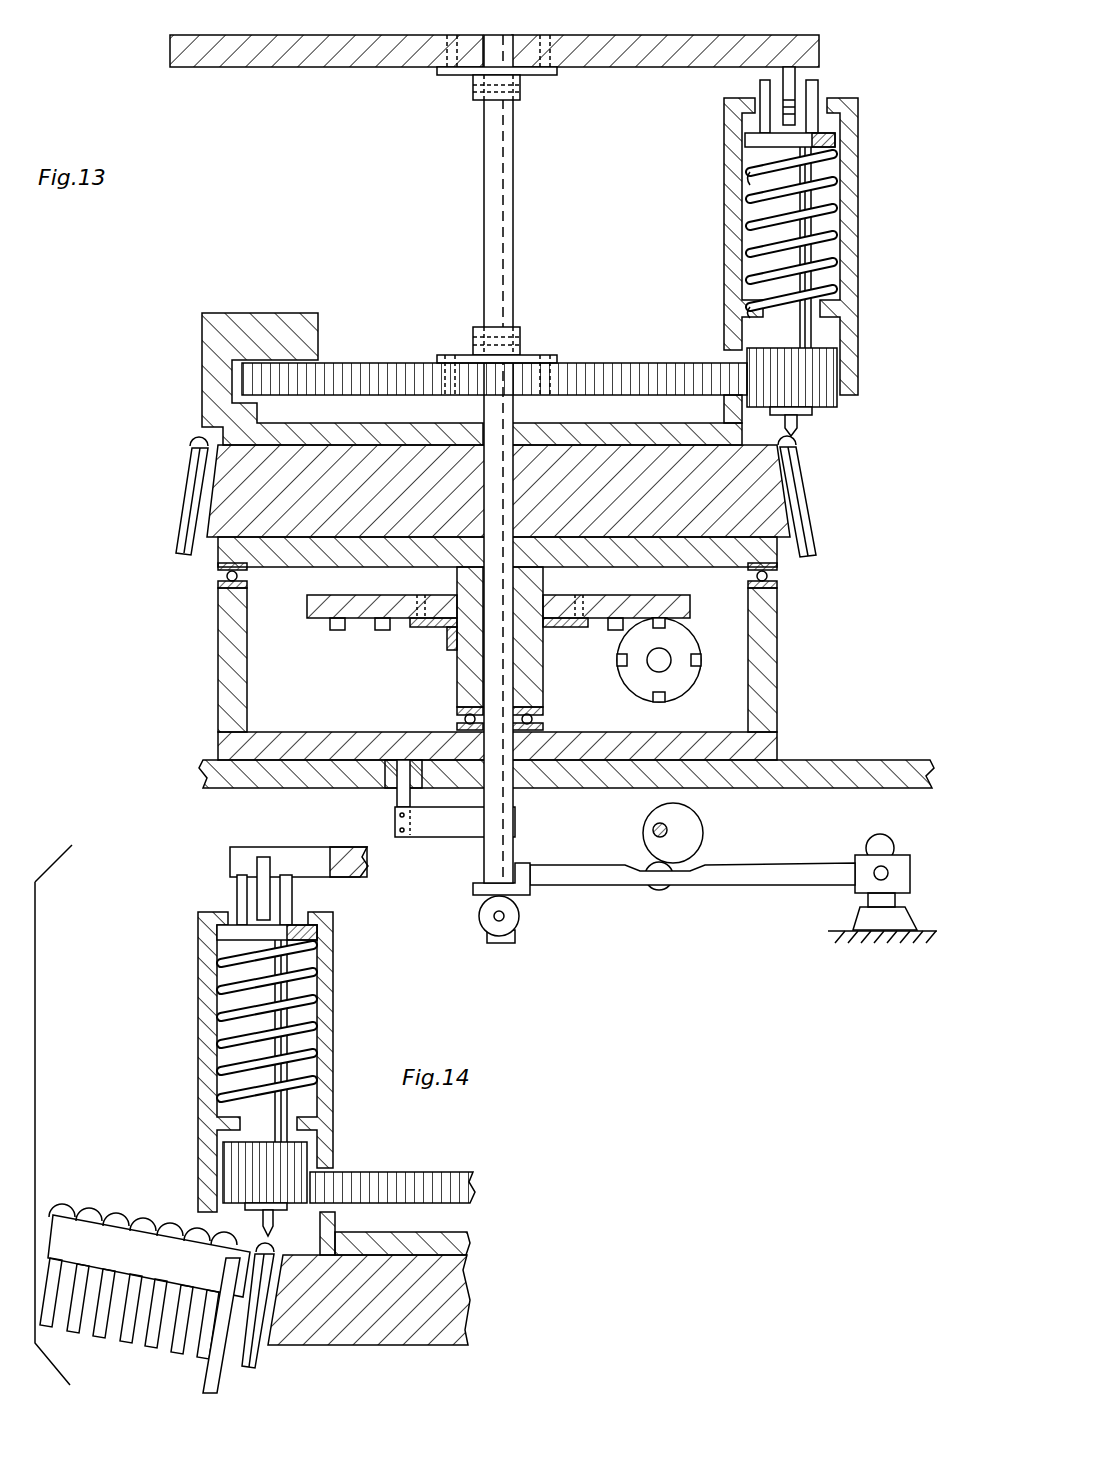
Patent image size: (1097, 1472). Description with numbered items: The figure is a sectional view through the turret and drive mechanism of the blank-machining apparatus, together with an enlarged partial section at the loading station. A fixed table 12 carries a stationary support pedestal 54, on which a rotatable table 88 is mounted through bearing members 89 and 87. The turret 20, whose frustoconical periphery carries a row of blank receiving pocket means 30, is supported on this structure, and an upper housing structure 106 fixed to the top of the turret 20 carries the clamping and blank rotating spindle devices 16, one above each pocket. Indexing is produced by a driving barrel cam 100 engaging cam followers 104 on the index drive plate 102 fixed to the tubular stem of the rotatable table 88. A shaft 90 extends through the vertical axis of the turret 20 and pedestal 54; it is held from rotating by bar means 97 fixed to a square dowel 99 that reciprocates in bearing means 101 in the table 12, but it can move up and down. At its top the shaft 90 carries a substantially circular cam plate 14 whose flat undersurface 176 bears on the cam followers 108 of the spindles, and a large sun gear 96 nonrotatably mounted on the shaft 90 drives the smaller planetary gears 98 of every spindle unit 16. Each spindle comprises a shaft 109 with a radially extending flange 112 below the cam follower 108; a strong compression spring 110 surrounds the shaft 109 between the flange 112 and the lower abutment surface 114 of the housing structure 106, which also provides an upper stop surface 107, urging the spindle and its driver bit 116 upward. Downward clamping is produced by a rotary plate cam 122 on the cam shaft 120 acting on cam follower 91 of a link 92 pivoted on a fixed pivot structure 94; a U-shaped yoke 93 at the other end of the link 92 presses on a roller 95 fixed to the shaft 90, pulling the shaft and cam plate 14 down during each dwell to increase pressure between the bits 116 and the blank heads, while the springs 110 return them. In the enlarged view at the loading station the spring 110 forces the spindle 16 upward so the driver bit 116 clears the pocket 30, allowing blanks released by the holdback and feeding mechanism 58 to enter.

In FIG. 13, the table 12 is at (884, 760).
In FIG. 13, the cam plate 14 is at (599, 33).
In FIG. 14, the cam plate 14 is at (230, 862).
In FIG. 13, the spindle device 16 is at (872, 150).
In FIG. 14, the spindle device 16 is at (350, 982).
In FIG. 13, the turret 20 is at (654, 506).
In FIG. 14, the turret 20 is at (450, 1305).
In FIG. 13, the blank receiving pocket means 30 is at (200, 490).
In FIG. 14, the blank receiving pocket means 30 is at (258, 1335).
In FIG. 13, the support pedestal 54 is at (770, 690).
In FIG. 14, the holdback and feeding mechanism 58 is at (205, 1365).
In FIG. 13, the bearing member 87 is at (456, 715).
In FIG. 13, the rotatable table 88 is at (222, 560).
In FIG. 13, the bearing member 89 is at (235, 582).
In FIG. 13, the shaft 90 is at (483, 180).
In FIG. 13, the cam follower 91 is at (665, 893).
In FIG. 13, the link 92 is at (790, 865).
In FIG. 13, the U-shaped yoke 93 is at (530, 870).
In FIG. 13, the fixed pivot structure 94 is at (850, 922).
In FIG. 13, the roller 95 is at (520, 914).
In FIG. 13, the sun gear 96 is at (612, 362).
In FIG. 14, the sun gear 96 is at (392, 1187).
In FIG. 13, the bar means 97 is at (444, 826).
In FIG. 13, the planetary gear 98 is at (838, 405).
In FIG. 14, the planetary gear 98 is at (265, 1176).
In FIG. 13, the square dowel 99 is at (398, 795).
In FIG. 13, the barrel cam 100 is at (700, 688).
In FIG. 13, the bearing means 101 is at (388, 776).
In FIG. 13, the index drive plate 102 is at (330, 595).
In FIG. 13, the cam follower 104 is at (336, 632).
In FIG. 13, the upper housing structure 106 is at (730, 205).
In FIG. 14, the upper housing structure 106 is at (200, 1020).
In FIG. 13, the upper stop surface 107 is at (838, 98).
In FIG. 13, the cam follower 108 is at (782, 72).
In FIG. 14, the cam follower 108 is at (264, 891).
In FIG. 13, the shaft 109 is at (780, 228).
In FIG. 14, the shaft 109 is at (267, 1021).
In FIG. 13, the compression spring 110 is at (820, 195).
In FIG. 14, the compression spring 110 is at (281, 1041).
In FIG. 13, the radially extending flange 112 is at (750, 140).
In FIG. 14, the radially extending flange 112 is at (267, 932).
In FIG. 13, the lower abutment surface 114 is at (752, 292).
In FIG. 13, the driver bit 116 is at (800, 422).
In FIG. 14, the driver bit 116 is at (262, 1218).
In FIG. 13, the cam shaft 120 is at (653, 828).
In FIG. 13, the rotary plate cam 122 is at (705, 830).
In FIG. 13, the flat undersurface 176 is at (325, 68).